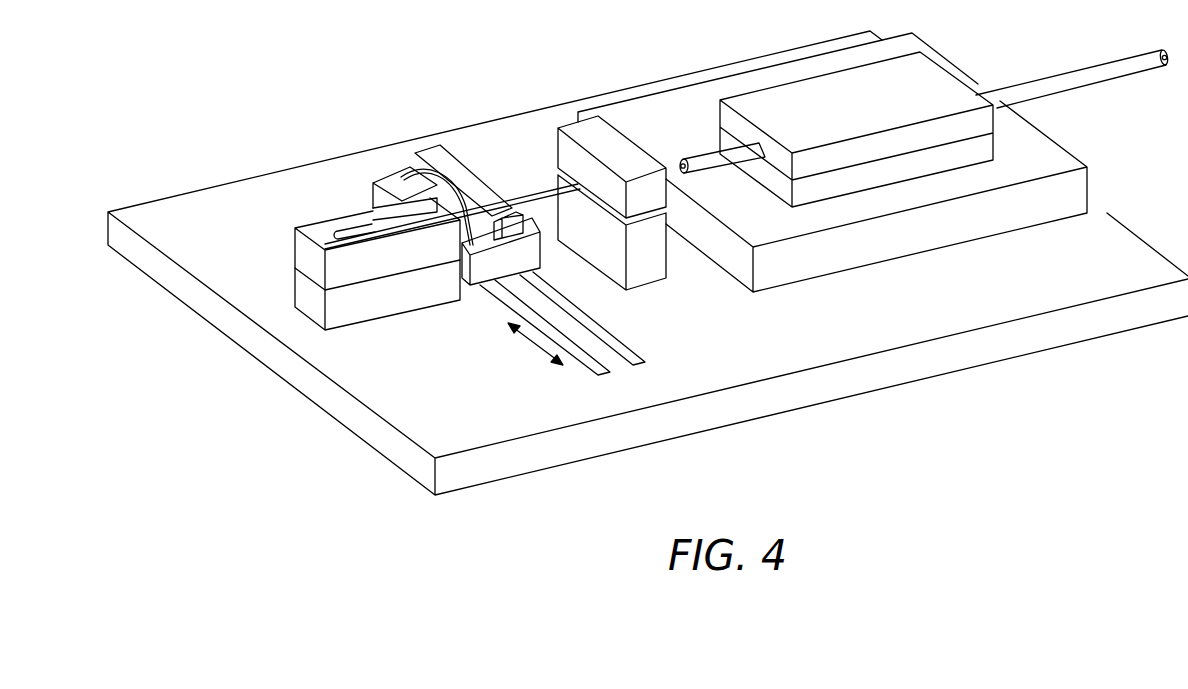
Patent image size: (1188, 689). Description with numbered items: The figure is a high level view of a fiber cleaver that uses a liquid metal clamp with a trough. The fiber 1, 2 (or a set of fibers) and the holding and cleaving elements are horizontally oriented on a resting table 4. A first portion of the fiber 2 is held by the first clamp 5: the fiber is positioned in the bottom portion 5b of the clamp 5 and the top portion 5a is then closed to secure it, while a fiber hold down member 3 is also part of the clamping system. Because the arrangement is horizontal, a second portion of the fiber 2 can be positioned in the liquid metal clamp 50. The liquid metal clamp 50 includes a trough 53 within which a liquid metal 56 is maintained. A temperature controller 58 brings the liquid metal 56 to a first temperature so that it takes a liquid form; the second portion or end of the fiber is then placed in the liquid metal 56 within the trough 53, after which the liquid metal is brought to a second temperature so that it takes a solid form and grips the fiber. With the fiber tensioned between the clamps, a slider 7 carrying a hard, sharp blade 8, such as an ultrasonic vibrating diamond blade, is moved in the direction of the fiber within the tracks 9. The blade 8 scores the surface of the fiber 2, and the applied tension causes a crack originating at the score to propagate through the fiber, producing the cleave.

The fiber 1 is at (1113, 65).
The fiber 2 is at (541, 202).
The fiber hold down member 3 is at (932, 76).
The resting table 4 is at (1088, 190).
The first clamp 5 is at (595, 179).
The top portion of clamp 5a is at (570, 128).
The bottom portion of clamp 5b is at (652, 274).
The slider 7 is at (470, 180).
The blade 8 is at (405, 174).
The tracks 9 is at (642, 345).
The liquid metal clamp 50 is at (429, 258).
The trough 53 is at (340, 226).
The liquid metal 56 is at (366, 232).
The temperature controller 58 is at (395, 305).